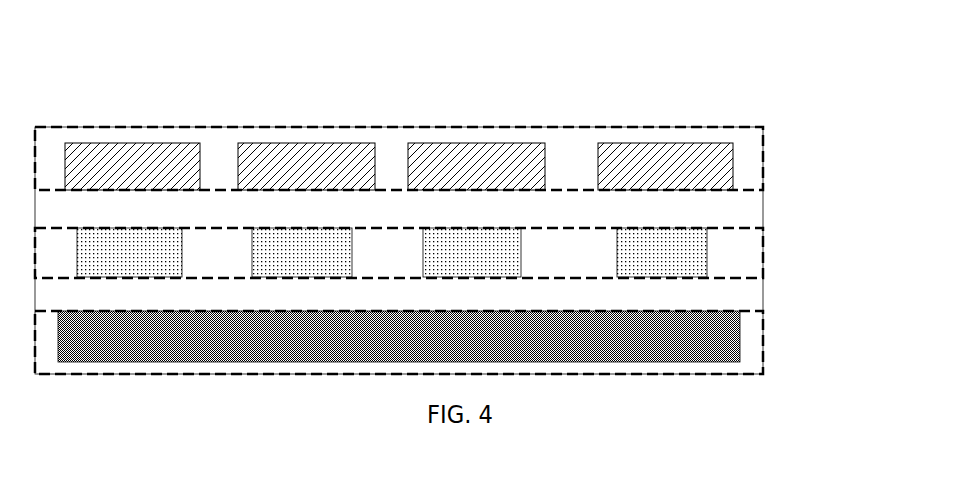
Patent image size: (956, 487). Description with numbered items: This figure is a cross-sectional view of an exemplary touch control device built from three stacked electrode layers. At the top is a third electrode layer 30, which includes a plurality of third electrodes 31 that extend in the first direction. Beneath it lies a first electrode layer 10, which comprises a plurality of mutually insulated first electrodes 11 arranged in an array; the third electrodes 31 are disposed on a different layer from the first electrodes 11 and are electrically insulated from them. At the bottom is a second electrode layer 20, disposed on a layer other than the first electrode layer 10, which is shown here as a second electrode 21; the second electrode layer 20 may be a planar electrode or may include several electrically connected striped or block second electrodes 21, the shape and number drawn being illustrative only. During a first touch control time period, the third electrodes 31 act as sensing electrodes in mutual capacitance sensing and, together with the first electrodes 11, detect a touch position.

The first electrode layer 10 is at (763, 238).
The first electrodes 11 is at (476, 245).
The second electrode layer 20 is at (763, 357).
The second electrode 21 is at (740, 311).
The third electrode layer 30 is at (737, 127).
The third electrodes 31 is at (691, 157).